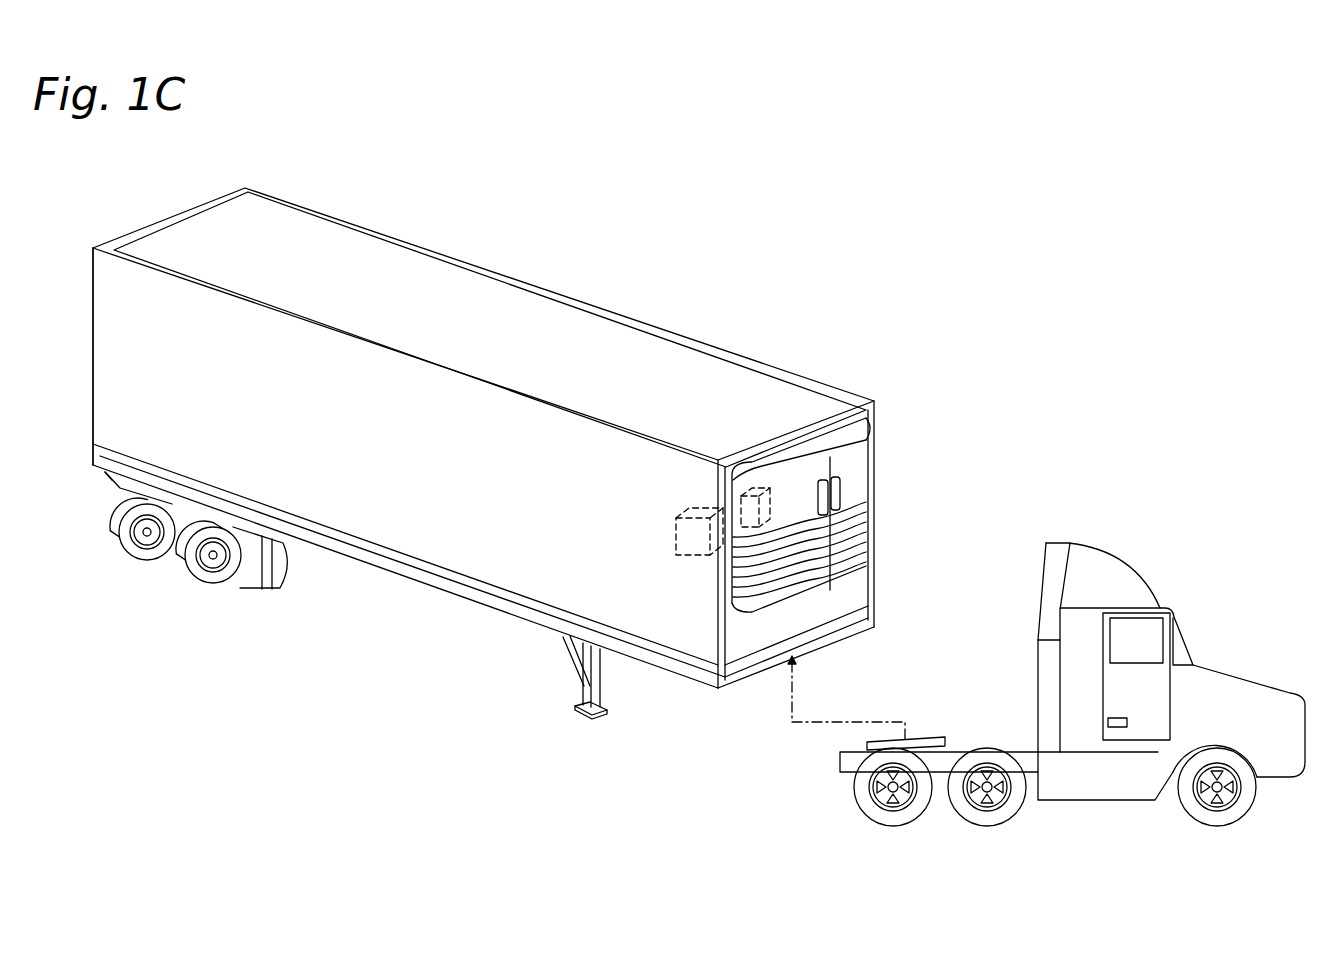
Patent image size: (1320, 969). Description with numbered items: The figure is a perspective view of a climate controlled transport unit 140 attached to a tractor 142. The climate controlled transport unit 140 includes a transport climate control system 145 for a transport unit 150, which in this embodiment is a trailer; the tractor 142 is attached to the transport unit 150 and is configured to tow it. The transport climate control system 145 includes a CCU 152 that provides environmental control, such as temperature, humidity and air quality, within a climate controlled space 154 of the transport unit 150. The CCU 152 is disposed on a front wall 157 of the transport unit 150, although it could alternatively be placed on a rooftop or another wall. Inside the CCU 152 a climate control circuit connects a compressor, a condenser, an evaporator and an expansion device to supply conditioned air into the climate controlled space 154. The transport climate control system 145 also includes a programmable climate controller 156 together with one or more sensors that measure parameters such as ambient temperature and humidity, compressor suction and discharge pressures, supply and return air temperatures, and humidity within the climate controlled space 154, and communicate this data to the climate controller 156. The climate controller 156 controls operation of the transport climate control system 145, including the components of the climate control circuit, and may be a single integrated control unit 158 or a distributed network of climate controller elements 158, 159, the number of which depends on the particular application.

The climate controlled transport unit 140 is at (503, 250).
The tractor 142 is at (1228, 672).
The transport climate control system 145 is at (920, 297).
The transport unit 150 is at (622, 309).
The CCU 152 is at (864, 468).
The climate controlled space 154 is at (485, 520).
The programmable climate controller 156 is at (587, 757).
The front wall 157 is at (873, 413).
The single integrated control unit 158 is at (763, 527).
The climate controller element 159 is at (705, 557).